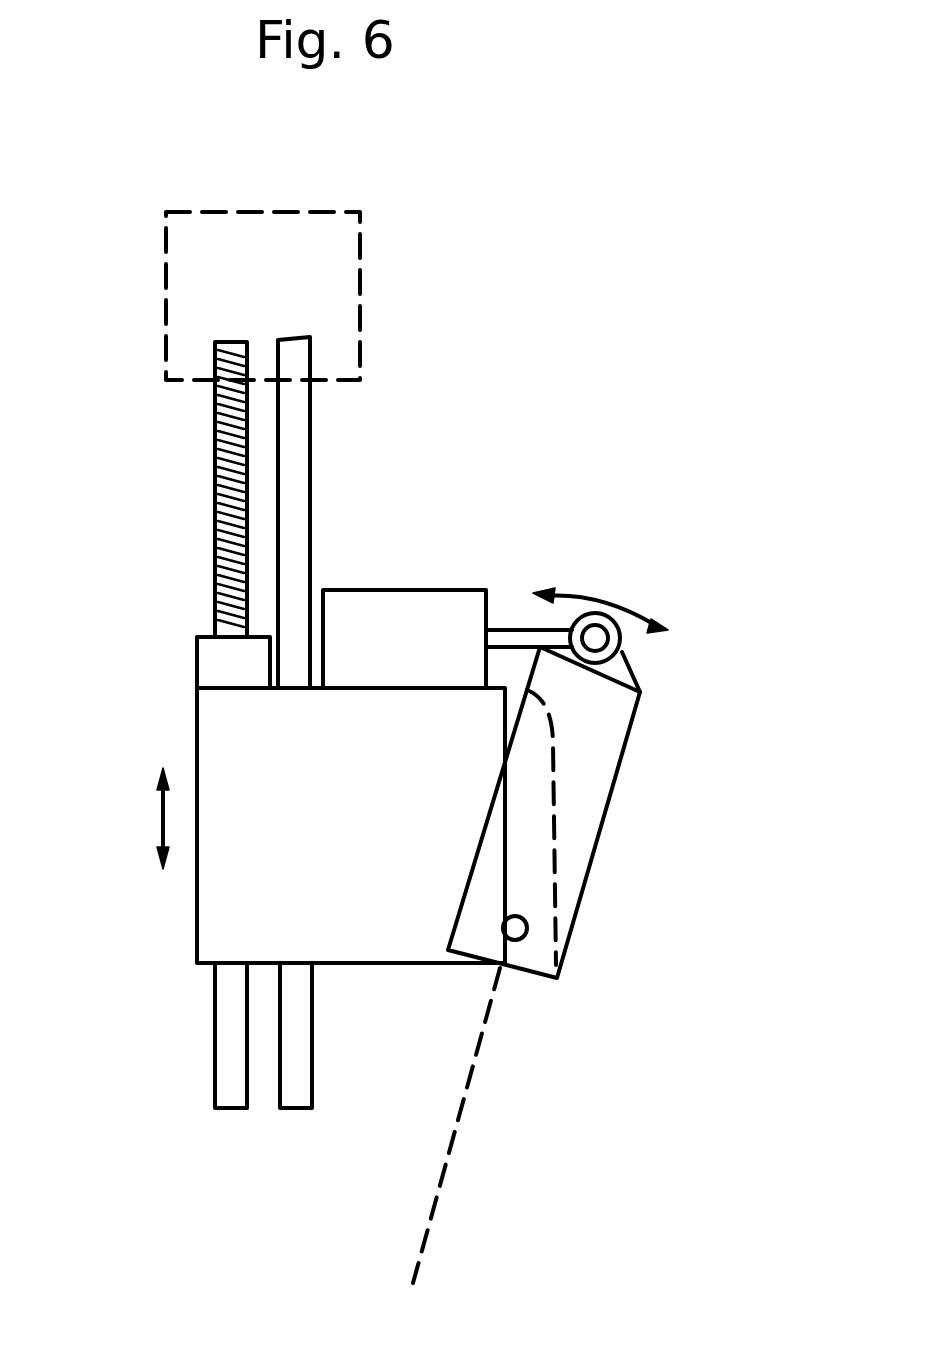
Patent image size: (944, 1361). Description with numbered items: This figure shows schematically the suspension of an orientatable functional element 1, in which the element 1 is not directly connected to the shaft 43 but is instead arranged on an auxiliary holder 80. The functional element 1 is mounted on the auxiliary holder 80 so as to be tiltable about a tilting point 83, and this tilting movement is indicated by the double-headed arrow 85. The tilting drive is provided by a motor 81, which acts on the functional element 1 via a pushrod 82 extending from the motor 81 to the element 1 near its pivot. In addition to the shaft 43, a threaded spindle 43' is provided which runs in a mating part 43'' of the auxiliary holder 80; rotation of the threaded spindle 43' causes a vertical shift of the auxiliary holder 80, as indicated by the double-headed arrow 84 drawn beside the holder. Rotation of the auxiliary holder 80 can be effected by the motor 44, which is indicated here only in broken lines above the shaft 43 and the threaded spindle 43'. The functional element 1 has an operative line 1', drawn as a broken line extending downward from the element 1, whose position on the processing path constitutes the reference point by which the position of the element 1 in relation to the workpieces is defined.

The motor 44 is at (360, 240).
The threaded spindle 43' is at (178, 725).
The shaft 43 is at (347, 722).
The mating part 43'' is at (170, 647).
The auxiliary holder 80 is at (245, 740).
The double-headed arrow 84 is at (160, 787).
The motor 81 is at (420, 602).
The pushrod 82 is at (517, 632).
The double-headed arrow 85 is at (577, 598).
The functional element 1 is at (568, 812).
The tilting point 83 is at (526, 936).
The operative line 1' is at (468, 1125).